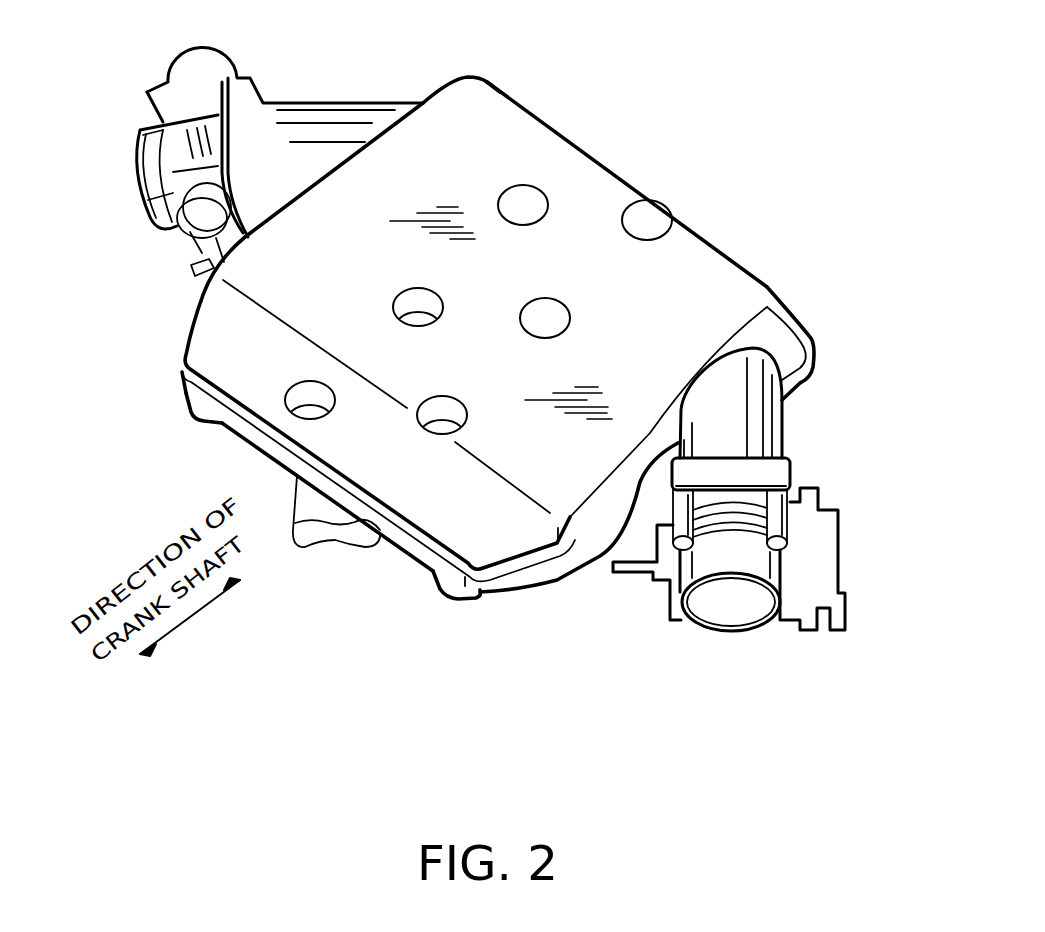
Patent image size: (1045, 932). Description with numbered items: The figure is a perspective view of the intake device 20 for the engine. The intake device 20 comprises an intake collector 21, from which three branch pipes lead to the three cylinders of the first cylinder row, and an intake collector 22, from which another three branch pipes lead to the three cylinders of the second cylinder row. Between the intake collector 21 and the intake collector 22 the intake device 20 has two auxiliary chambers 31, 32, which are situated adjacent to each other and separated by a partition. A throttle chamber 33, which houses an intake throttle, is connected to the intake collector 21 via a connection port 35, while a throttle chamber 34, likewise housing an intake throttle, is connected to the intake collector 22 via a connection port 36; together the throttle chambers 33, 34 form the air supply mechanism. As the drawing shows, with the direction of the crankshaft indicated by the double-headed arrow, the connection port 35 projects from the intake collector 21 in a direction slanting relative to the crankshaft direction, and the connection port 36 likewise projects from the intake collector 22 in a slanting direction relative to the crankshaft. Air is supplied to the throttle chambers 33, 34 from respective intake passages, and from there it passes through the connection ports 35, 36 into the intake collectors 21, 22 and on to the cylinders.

The intake device 20 is at (646, 174).
The intake collector 21 is at (748, 302).
The intake collector 22 is at (475, 102).
The auxiliary chamber 31 is at (688, 262).
The auxiliary chamber 32 is at (545, 138).
The throttle chamber 33 is at (827, 552).
The throttle chamber 34 is at (150, 152).
The connection port 35 is at (770, 433).
The connection port 36 is at (355, 120).